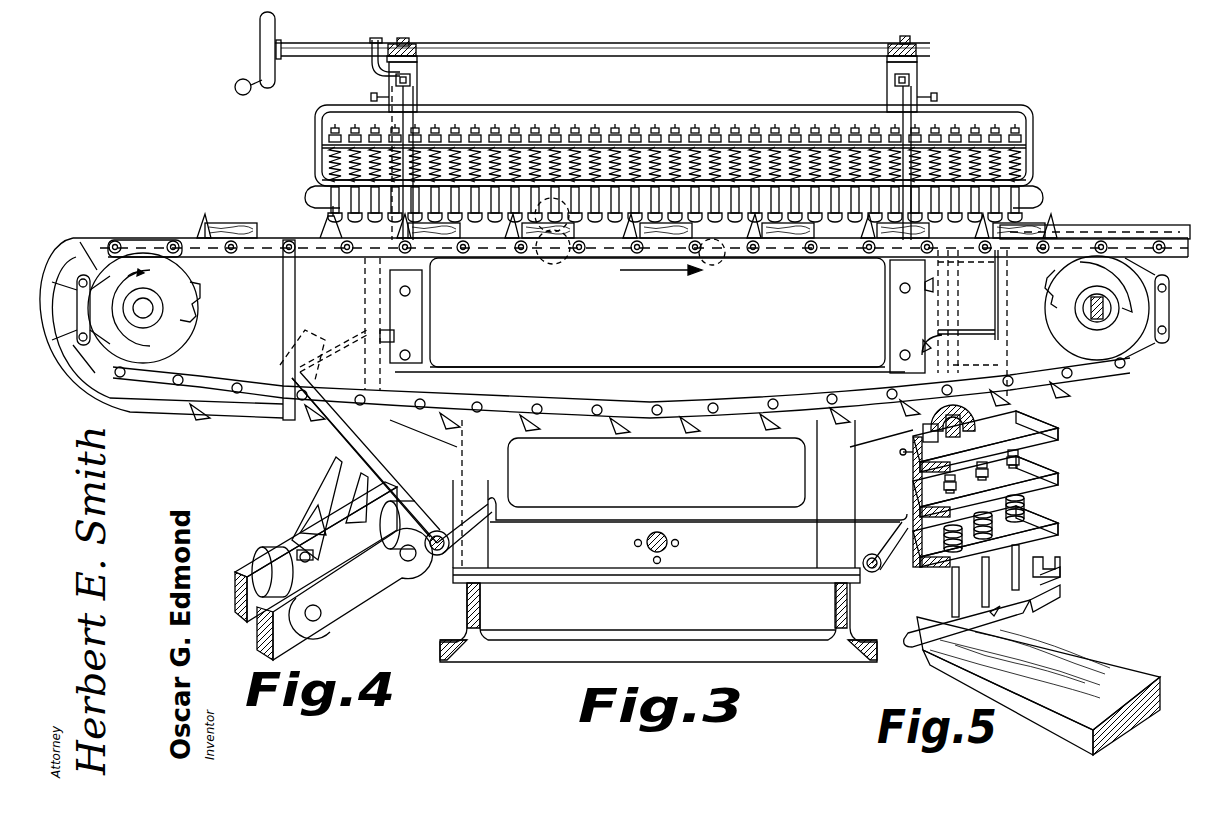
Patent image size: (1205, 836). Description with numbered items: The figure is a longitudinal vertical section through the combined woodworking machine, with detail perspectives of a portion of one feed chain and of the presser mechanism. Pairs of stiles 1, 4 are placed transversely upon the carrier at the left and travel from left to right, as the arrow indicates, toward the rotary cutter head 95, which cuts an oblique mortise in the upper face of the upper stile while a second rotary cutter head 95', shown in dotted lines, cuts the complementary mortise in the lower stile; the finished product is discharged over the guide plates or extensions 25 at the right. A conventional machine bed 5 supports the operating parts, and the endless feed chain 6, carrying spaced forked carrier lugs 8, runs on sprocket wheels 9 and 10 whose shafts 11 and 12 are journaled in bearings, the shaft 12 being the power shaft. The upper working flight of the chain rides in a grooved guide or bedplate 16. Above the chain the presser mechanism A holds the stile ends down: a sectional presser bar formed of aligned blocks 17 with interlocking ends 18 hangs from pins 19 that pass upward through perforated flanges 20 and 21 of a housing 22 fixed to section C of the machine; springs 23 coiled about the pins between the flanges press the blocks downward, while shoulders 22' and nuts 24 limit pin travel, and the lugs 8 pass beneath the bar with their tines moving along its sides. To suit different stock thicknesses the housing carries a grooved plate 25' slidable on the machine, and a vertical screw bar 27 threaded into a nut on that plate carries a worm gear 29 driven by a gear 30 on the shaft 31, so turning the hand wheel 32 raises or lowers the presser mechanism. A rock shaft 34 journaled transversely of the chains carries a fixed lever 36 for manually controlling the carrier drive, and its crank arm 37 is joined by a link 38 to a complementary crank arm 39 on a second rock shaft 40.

In FIG. 3, the stile 1 is at (235, 225).
In FIG. 5, the stile 1 is at (1100, 643).
In FIG. 3, the stile 4 is at (246, 258).
In FIG. 3, the machine bed 5 is at (480, 621).
In FIG. 3, the feed chain 6 is at (265, 395).
In FIG. 4, the feed chain 6 is at (340, 624).
In FIG. 3, the carrier lug 8 is at (218, 223).
In FIG. 4, the carrier lug 8 is at (322, 520).
In FIG. 3, the sprocket wheel 9 is at (126, 308).
In FIG. 3, the sprocket wheel 10 is at (1116, 345).
In FIG. 3, the shaft 11 is at (144, 314).
In FIG. 3, the power shaft 12 is at (1083, 308).
In FIG. 3, the grooved guide or bedplate 16 is at (661, 315).
In FIG. 3, the block 17 is at (378, 205).
In FIG. 5, the block 17 is at (1036, 580).
In FIG. 5, the interlocking end 18 is at (1030, 618).
In FIG. 3, the pin 19 is at (340, 203).
In FIG. 5, the pin 19 is at (1025, 561).
In FIG. 3, the perforated flange 20 is at (330, 182).
In FIG. 5, the perforated flange 20 is at (1028, 538).
In FIG. 3, the perforated flange 21 is at (330, 149).
In FIG. 5, the perforated flange 21 is at (1030, 476).
In FIG. 3, the housing 22 is at (682, 144).
In FIG. 5, the housing 22 is at (1008, 486).
In FIG. 3, the shoulder 22' is at (701, 164).
In FIG. 5, the shoulder 22' is at (1065, 498).
In FIG. 5, the spring 23 is at (1016, 502).
In FIG. 3, the nut 24 is at (528, 128).
In FIG. 5, the nut 24 is at (1021, 464).
In FIG. 3, the guide plate or extension 25 is at (1095, 220).
In FIG. 3, the grooved plate 25' is at (654, 151).
In FIG. 3, the screw bar 27 is at (386, 80).
In FIG. 3, the worm gear 29 is at (418, 52).
In FIG. 3, the gear 30 is at (405, 44).
In FIG. 3, the shaft 31 is at (572, 48).
In FIG. 3, the hand wheel 32 is at (275, 84).
In FIG. 3, the rock shaft 34 is at (434, 556).
In FIG. 3, the lever 36 is at (398, 472).
In FIG. 3, the crank arm 37 is at (482, 506).
In FIG. 3, the link 38 is at (604, 524).
In FIG. 3, the crank arm 39 is at (894, 557).
In FIG. 3, the rock shaft 40 is at (872, 573).
In FIG. 3, the rotary cutter head 95 is at (523, 251).
In FIG. 3, the rotary cutter head 95' is at (630, 277).
In FIG. 3, the presser mechanism A is at (610, 82).
In FIG. 3, the section C is at (602, 480).